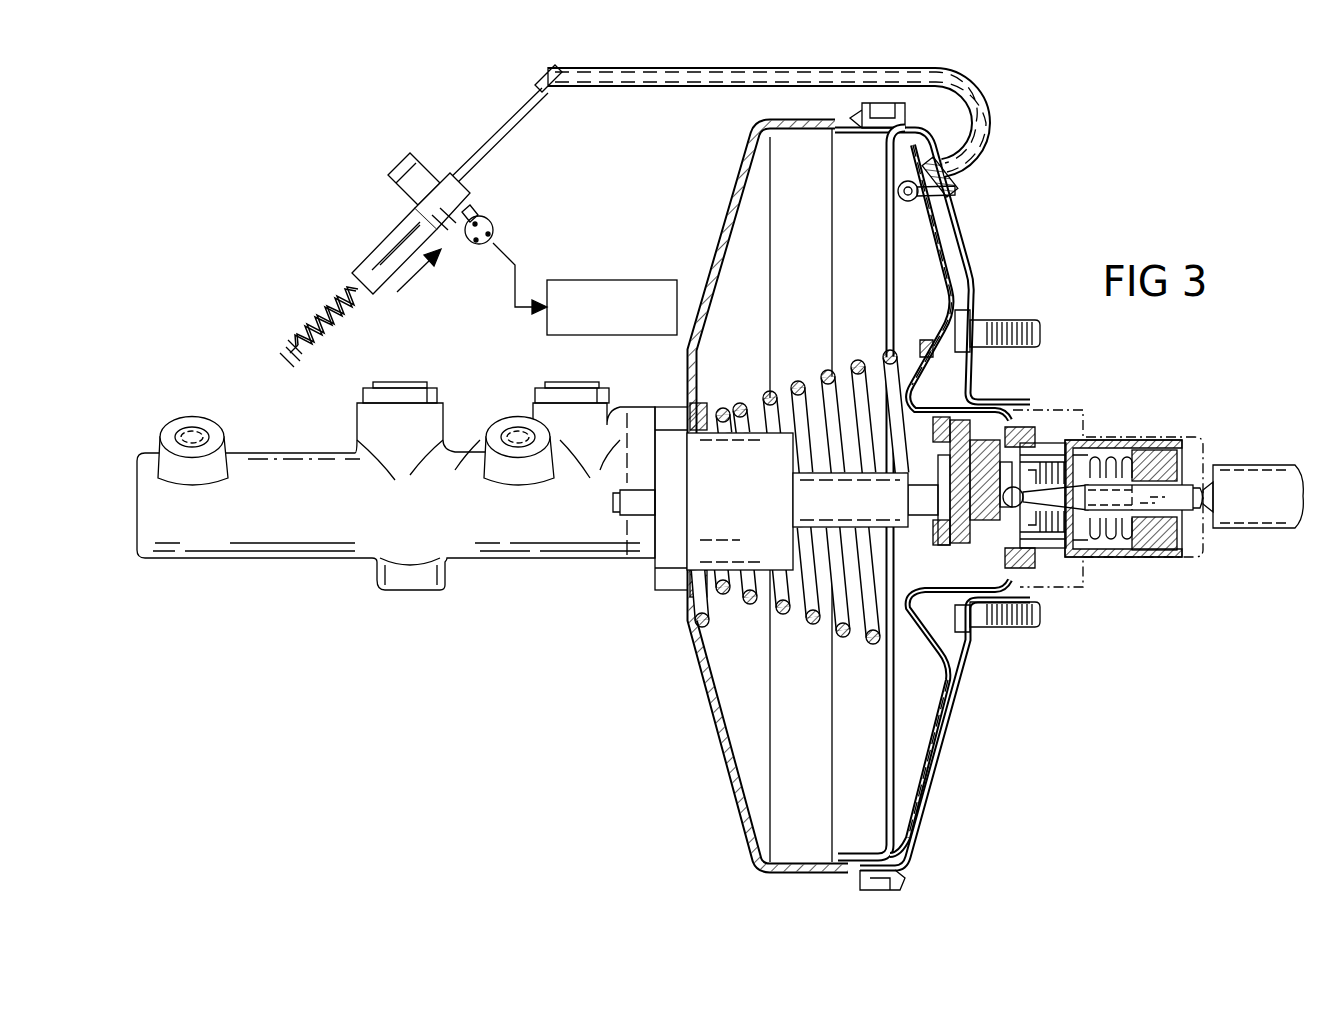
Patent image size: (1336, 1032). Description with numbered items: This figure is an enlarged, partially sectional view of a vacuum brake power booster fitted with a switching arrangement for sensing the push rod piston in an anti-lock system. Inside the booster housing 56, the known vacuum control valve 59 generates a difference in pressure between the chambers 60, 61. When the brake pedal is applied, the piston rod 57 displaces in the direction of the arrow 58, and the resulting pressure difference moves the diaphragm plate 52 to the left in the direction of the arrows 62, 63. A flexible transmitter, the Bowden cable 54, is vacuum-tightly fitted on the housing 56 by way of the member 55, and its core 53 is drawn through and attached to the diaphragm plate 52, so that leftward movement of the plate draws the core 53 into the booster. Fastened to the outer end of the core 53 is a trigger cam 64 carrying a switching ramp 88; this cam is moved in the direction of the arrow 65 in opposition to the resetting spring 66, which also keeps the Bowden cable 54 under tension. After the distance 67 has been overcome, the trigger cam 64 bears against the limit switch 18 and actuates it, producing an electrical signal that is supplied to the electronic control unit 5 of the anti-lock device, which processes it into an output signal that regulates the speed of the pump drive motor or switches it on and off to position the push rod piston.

The electronic control unit 5 is at (617, 280).
The limit switch 18 is at (505, 228).
The diaphragm plate 52 is at (940, 247).
The core 53 is at (520, 125).
The Bowden cable 54 is at (995, 113).
The member 55 is at (960, 188).
The housing 56 is at (973, 273).
The piston rod 57 is at (1153, 488).
The arrow 58 is at (1138, 582).
The vacuum control valve 59 is at (1078, 420).
The chamber 60 is at (952, 262).
The chamber 61 is at (729, 296).
The arrow 62 is at (917, 282).
The arrow 63 is at (907, 745).
The trigger cam 64 is at (368, 262).
The arrow 65 is at (421, 275).
The resetting spring 66 is at (338, 317).
The distance 67 is at (395, 170).
The switching ramp 88 is at (440, 223).